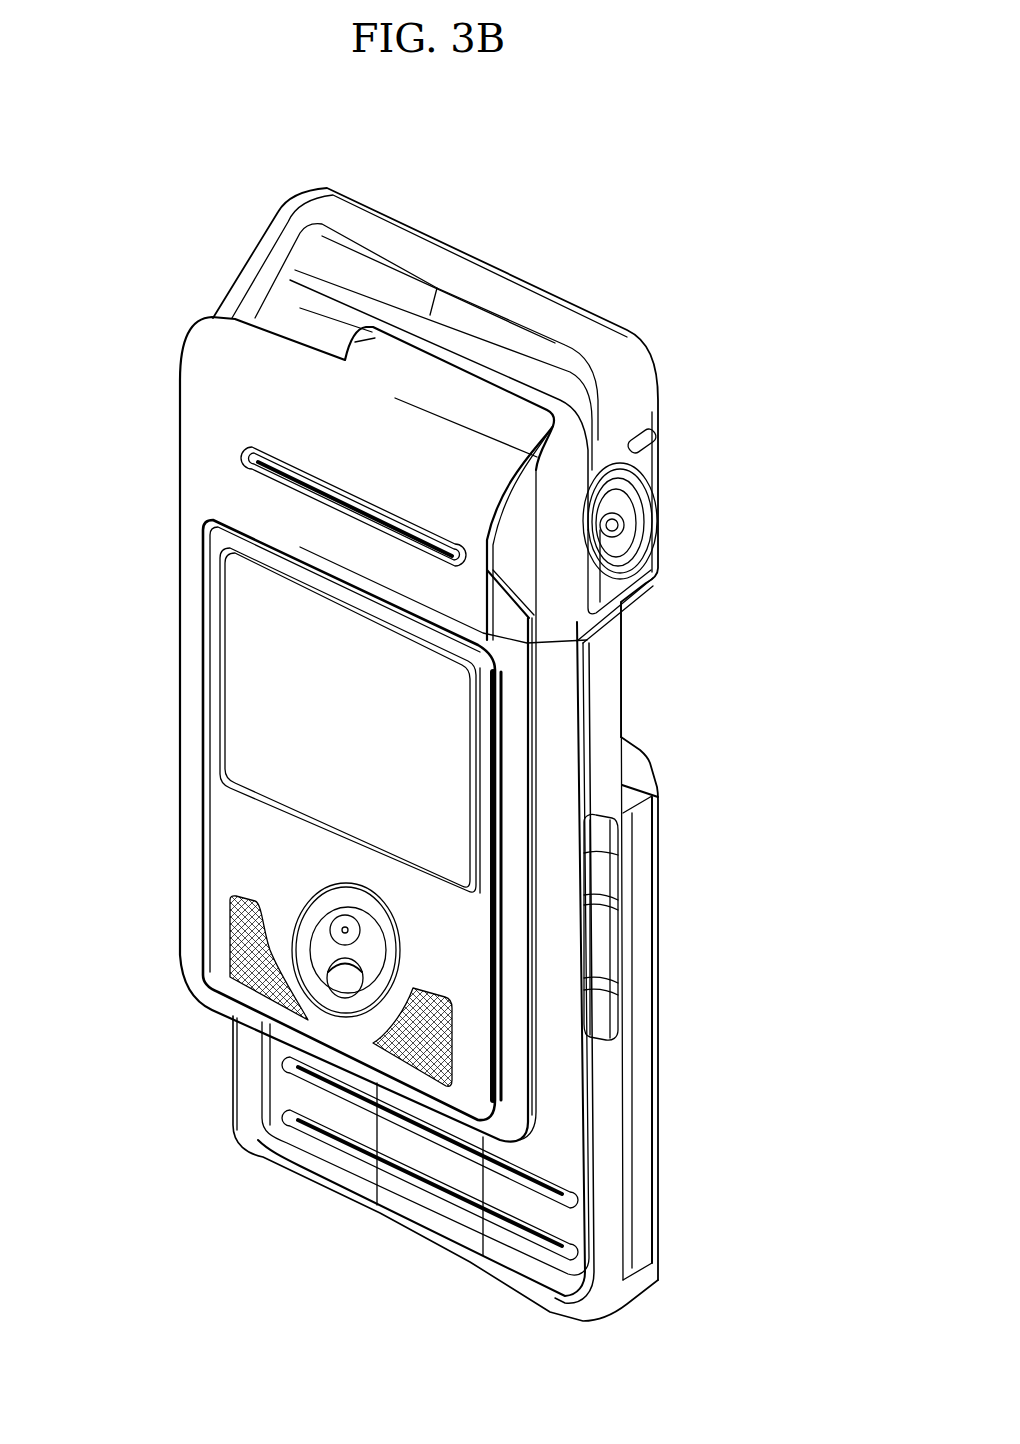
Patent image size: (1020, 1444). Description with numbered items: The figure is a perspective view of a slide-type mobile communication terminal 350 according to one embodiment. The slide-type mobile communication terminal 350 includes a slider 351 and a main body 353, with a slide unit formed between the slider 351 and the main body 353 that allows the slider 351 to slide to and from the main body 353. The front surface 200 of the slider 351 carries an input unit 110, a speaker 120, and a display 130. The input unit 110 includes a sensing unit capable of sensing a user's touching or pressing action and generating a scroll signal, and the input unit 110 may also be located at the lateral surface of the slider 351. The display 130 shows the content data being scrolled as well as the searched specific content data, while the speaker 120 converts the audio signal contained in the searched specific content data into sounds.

The input unit 110 is at (313, 904).
The speaker 120 is at (417, 1033).
The display 130 is at (247, 683).
The front surface 200 is at (193, 593).
The slide-type mobile communication terminal 350 is at (657, 250).
The slider 351 is at (608, 676).
The main body 353 is at (645, 1081).